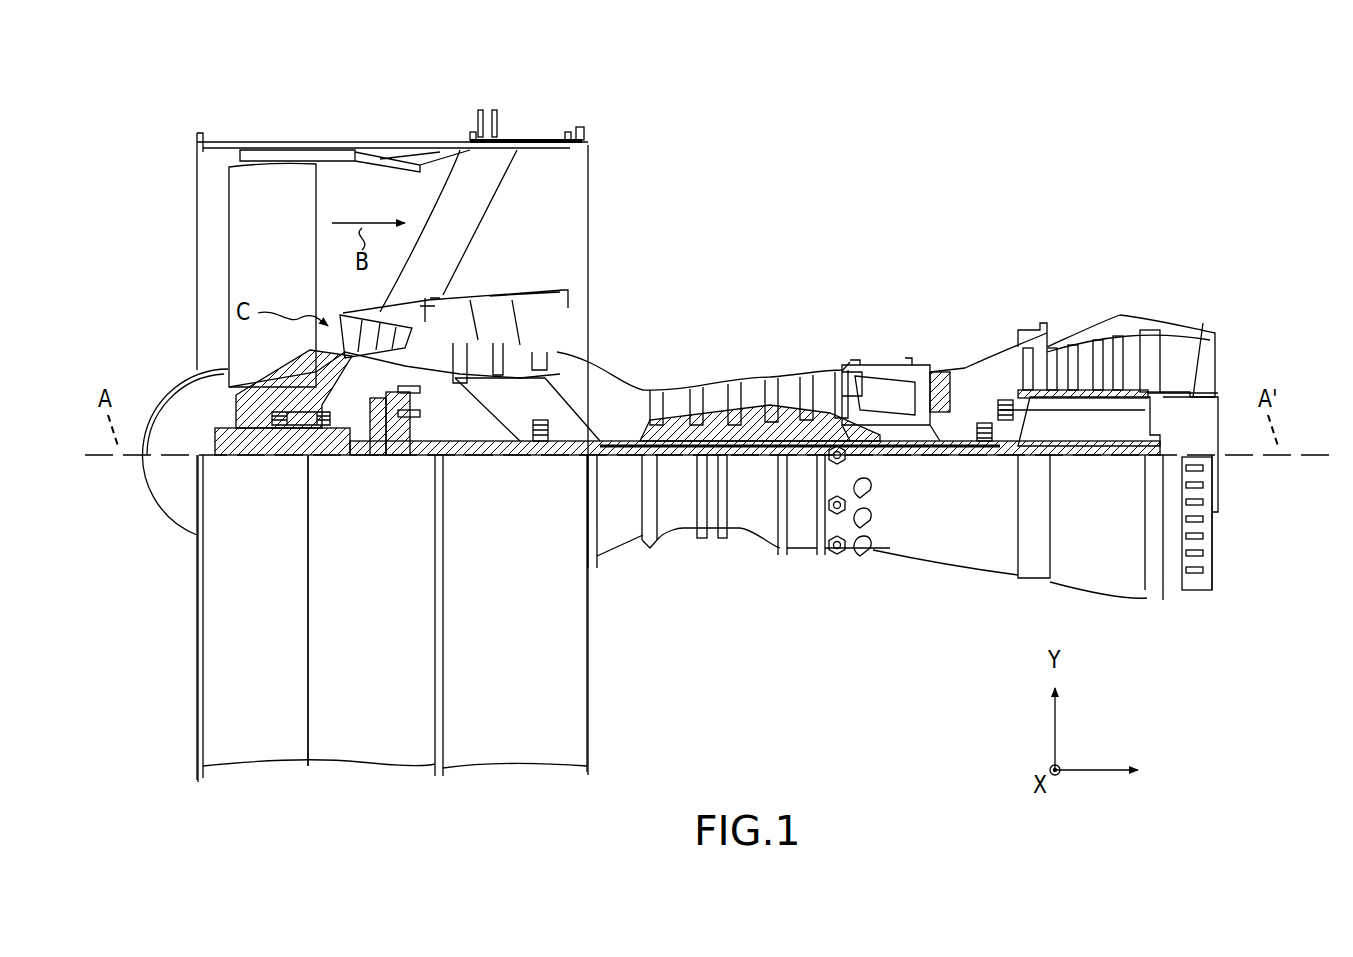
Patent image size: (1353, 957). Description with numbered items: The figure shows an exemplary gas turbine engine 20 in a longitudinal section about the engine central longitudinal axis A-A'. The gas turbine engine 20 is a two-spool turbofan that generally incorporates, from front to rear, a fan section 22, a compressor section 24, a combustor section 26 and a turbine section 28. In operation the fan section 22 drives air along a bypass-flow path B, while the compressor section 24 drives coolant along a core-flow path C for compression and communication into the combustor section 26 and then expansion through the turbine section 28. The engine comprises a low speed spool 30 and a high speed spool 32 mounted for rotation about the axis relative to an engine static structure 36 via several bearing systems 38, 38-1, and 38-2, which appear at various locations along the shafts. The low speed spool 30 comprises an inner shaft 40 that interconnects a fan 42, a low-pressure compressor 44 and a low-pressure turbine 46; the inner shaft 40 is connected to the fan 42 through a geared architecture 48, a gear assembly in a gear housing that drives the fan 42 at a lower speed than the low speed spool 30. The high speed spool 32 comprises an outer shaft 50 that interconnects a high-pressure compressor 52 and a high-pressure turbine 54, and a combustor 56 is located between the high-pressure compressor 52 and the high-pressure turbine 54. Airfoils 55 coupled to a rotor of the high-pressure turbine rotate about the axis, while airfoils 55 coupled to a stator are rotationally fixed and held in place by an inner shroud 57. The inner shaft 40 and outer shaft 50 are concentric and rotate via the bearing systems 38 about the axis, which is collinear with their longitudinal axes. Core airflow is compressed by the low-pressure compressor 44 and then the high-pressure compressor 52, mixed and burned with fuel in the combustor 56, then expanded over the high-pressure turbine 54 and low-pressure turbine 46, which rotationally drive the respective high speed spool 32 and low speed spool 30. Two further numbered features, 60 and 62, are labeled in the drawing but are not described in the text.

The gas turbine engine 20 is at (926, 176).
The fan section 22 is at (438, 121).
The compressor section 24 is at (445, 250).
The combustor section 26 is at (930, 250).
The turbine section 28 is at (1150, 250).
The low speed spool 30 is at (762, 462).
The high speed spool 32 is at (813, 408).
The engine static structure 36 is at (150, 798).
The bearing system 38 is at (1000, 447).
The bearing system 38-1 is at (280, 428).
The bearing system 38-2 is at (542, 458).
The inner shaft 40 is at (610, 456).
The fan 42 is at (280, 266).
The low-pressure compressor 44 is at (527, 350).
The low-pressure turbine 46 is at (1083, 337).
The geared architecture 48 is at (395, 498).
The outer shaft 50 is at (875, 442).
The high-pressure compressor 52 is at (752, 387).
The high-pressure turbine 54 is at (942, 378).
The airfoils 55 is at (473, 347).
The combustor 56 is at (884, 388).
The inner shroud 57 is at (517, 350).
The inlet guide vane 60 is at (410, 413).
The variable vane 62 is at (407, 389).